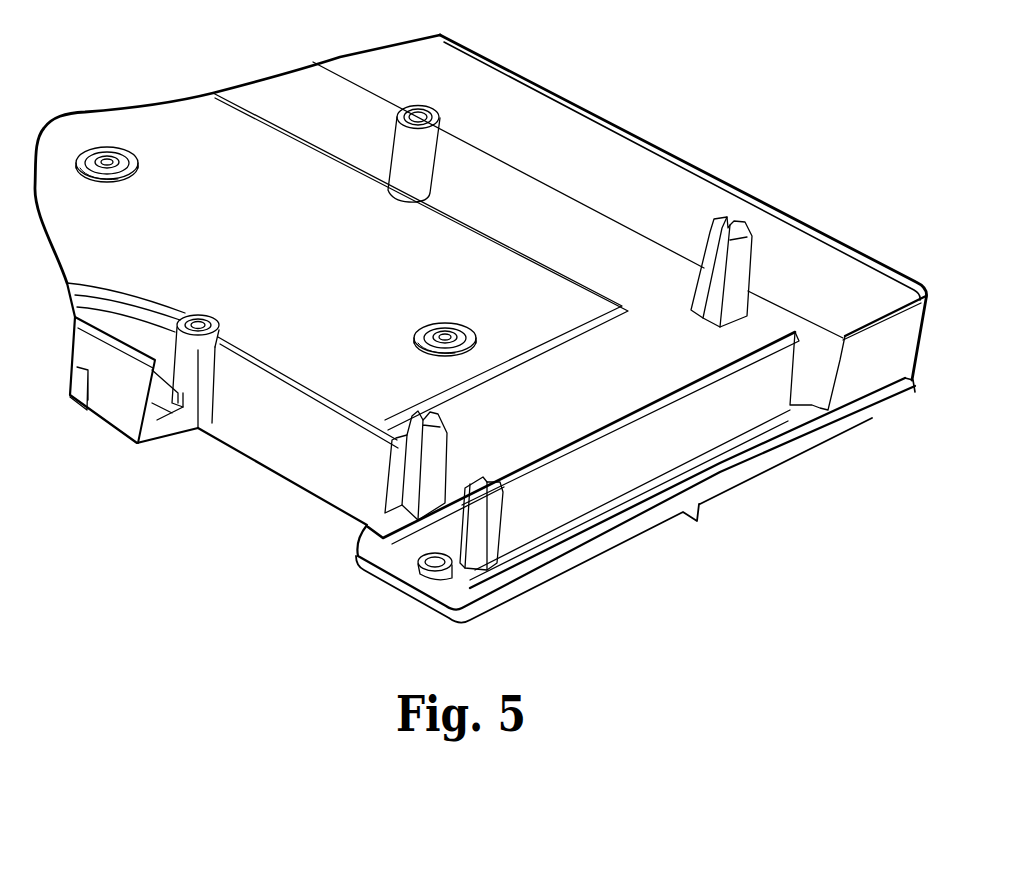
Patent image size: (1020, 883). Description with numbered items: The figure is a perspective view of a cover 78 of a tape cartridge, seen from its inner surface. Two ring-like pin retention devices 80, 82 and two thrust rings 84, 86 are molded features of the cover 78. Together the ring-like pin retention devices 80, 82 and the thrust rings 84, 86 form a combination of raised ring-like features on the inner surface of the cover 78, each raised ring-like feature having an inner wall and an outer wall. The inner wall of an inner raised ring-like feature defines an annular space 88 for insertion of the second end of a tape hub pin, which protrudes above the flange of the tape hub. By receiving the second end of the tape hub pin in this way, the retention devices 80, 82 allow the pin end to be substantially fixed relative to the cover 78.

The cover 78 is at (595, 566).
The ring-like pin retention device 80 is at (87, 173).
The ring-like pin retention device 82 is at (413, 352).
The thrust ring 84 is at (97, 148).
The thrust ring 86 is at (427, 325).
The annular space 88 is at (138, 160).